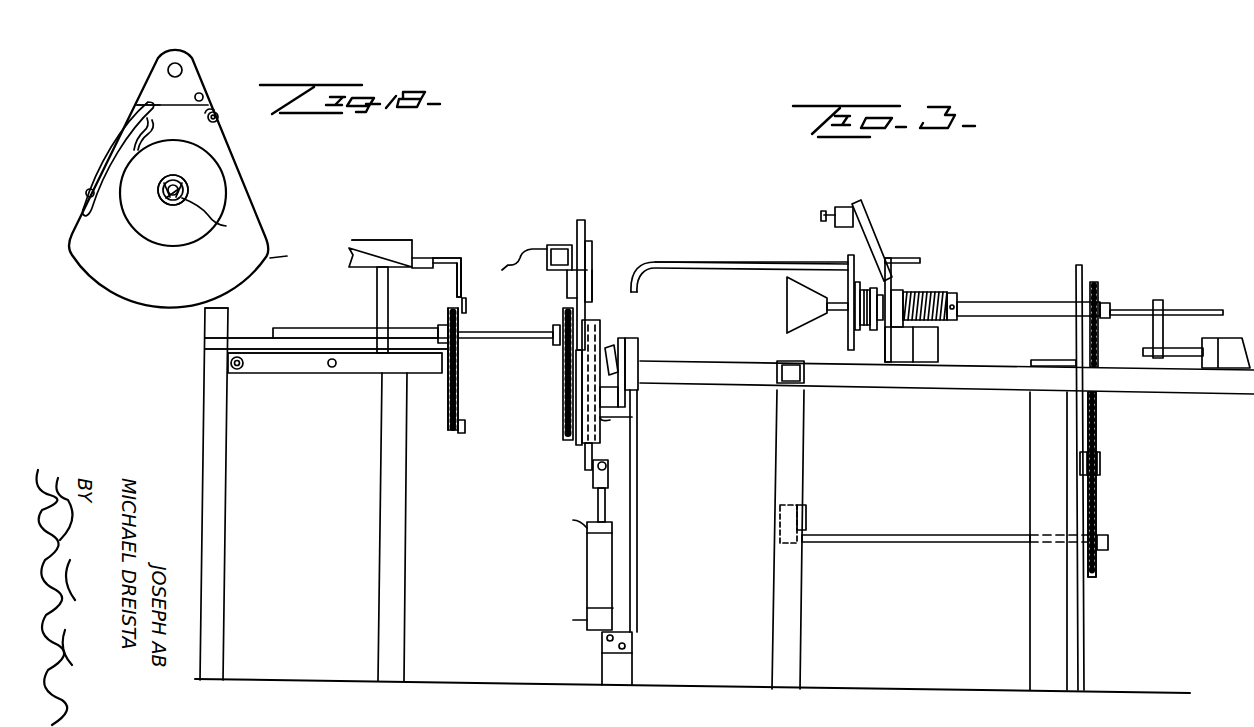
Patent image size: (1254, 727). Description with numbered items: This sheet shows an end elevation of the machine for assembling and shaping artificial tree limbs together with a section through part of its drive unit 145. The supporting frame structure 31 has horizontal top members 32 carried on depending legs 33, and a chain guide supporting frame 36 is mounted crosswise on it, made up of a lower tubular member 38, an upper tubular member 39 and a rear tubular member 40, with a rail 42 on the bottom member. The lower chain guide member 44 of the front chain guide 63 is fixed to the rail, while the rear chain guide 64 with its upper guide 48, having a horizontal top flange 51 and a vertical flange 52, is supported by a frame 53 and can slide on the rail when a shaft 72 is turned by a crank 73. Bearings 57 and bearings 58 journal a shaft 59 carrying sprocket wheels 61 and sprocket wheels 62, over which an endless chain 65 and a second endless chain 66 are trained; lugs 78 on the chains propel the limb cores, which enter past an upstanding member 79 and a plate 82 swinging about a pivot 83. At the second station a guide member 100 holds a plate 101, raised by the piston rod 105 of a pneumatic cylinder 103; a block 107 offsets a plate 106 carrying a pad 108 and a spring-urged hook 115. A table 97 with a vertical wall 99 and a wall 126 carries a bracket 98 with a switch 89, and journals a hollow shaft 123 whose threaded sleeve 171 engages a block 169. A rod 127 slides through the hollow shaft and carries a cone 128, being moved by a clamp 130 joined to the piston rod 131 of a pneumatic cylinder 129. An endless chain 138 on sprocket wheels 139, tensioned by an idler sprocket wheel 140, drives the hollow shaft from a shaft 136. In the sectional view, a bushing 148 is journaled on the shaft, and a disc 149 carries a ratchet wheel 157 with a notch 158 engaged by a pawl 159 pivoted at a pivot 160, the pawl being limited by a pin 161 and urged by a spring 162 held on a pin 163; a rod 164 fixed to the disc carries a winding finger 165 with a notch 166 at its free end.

In FIG. 18, the rod 164 is at (178, 65).
In FIG. 3, the rod 164 is at (717, 262).
In FIG. 18, the pivot 160 is at (202, 93).
In FIG. 18, the pin 161 is at (220, 136).
In FIG. 18, the pawl 159 is at (143, 108).
In FIG. 18, the spring 162 is at (113, 150).
In FIG. 18, the ratchet wheel 157 is at (218, 183).
In FIG. 18, the notch 158 is at (138, 150).
In FIG. 18, the pin 163 is at (86, 208).
In FIG. 18, the bushing 148 is at (163, 207).
In FIG. 18, the hollow shaft 123 is at (174, 207).
In FIG. 3, the hollow shaft 123 is at (985, 309).
In FIG. 18, the rod 127 is at (216, 222).
In FIG. 3, the rod 127 is at (1194, 316).
In FIG. 3, the legs 33 is at (226, 562).
In FIG. 3, the rear tubular member 40 is at (205, 320).
In FIG. 3, the lower tubular member 38 is at (205, 345).
In FIG. 3, the rail 42 is at (263, 336).
In FIG. 3, the shaft 59 is at (352, 328).
In FIG. 3, the supporting frame structure 31 is at (367, 386).
In FIG. 3, the shaft 72 is at (238, 370).
In FIG. 3, the crank 73 is at (331, 368).
In FIG. 3, the horizontal top members 32 is at (281, 375).
In FIG. 3, the upper tubular member 39 is at (376, 240).
In FIG. 3, the frame 53 is at (418, 258).
In FIG. 3, the horizontal top flange 51 is at (433, 260).
In FIG. 3, the vertical flange 52 is at (455, 282).
In FIG. 3, the upper guide 48 is at (476, 272).
In FIG. 3, the bearings 58 is at (440, 335).
In FIG. 3, the lugs 78 is at (467, 304).
In FIG. 3, the sprocket wheels 62 is at (462, 350).
In FIG. 3, the second endless chain 66 is at (458, 386).
In FIG. 3, the bearings 57 is at (544, 331).
In FIG. 3, the endless chain 65 is at (560, 416).
In FIG. 3, the sprocket wheels 61 is at (575, 352).
In FIG. 3, the upstanding member 79 is at (584, 220).
In FIG. 3, the plate 82 is at (592, 262).
In FIG. 3, the pivot 83 is at (595, 269).
In FIG. 3, the lower chain guide member 44 is at (556, 245).
In FIG. 3, the rear chain guide 64 is at (522, 254).
In FIG. 3, the front chain guide 63 is at (548, 312).
In FIG. 3, the guide member 100 is at (580, 441).
In FIG. 3, the plate 101 is at (590, 470).
In FIG. 3, the piston rod 105 is at (605, 502).
In FIG. 3, the pneumatic cylinder 103 is at (587, 566).
In FIG. 3, the pad 108 is at (638, 340).
In FIG. 3, the plate 106 is at (620, 398).
In FIG. 3, the block 107 is at (627, 420).
In FIG. 3, the hook 115 is at (611, 345).
In FIG. 3, the winding finger 165 is at (641, 263).
In FIG. 3, the notch 166 is at (645, 293).
In FIG. 3, the cone 128 is at (786, 306).
In FIG. 3, the drive unit 145 is at (836, 328).
In FIG. 3, the vertical wall 99 is at (893, 262).
In FIG. 3, the bracket 98 is at (867, 228).
In FIG. 3, the switch 89 is at (822, 213).
In FIG. 3, the threaded sleeve 171 is at (932, 300).
In FIG. 3, the block 169 is at (938, 342).
In FIG. 3, the table 97 is at (778, 400).
In FIG. 3, the shaft 136 is at (938, 537).
In FIG. 3, the wall 126 is at (1076, 270).
In FIG. 3, the sprocket wheels 139 is at (1100, 295).
In FIG. 3, the endless chain 138 is at (1098, 426).
In FIG. 3, the idler sprocket wheel 140 is at (1100, 466).
In FIG. 3, the clamp 130 is at (1153, 330).
In FIG. 3, the piston rod 131 is at (1182, 348).
In FIG. 3, the pneumatic cylinder 129 is at (1228, 367).
In FIG. 3, the disc 149 is at (296, 250).
In FIG. 3, the chain guide supporting frame 36 is at (340, 258).